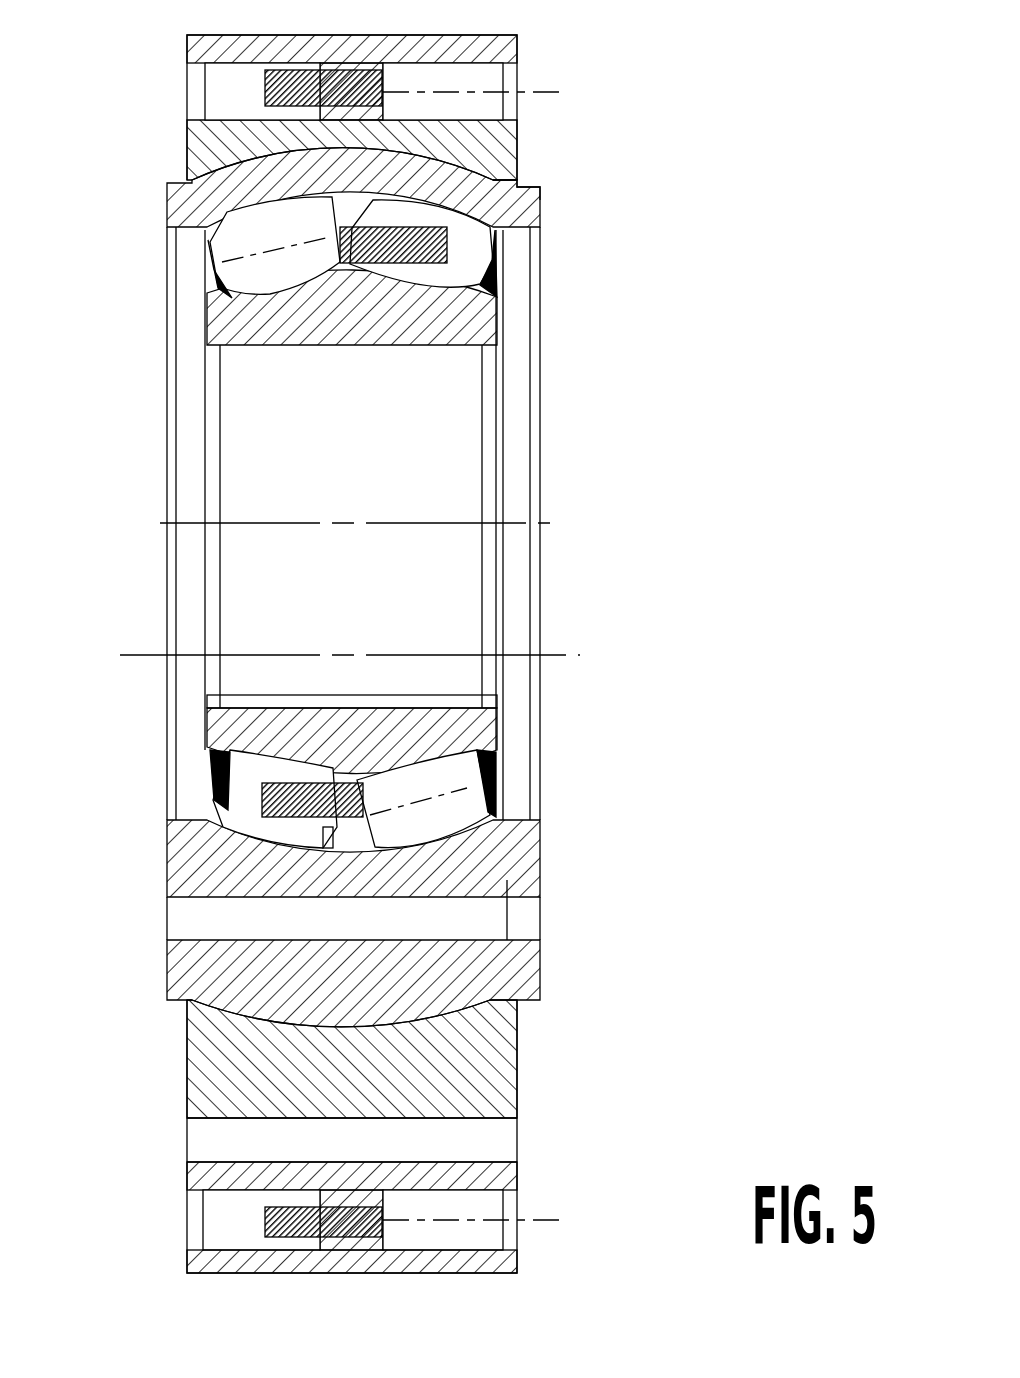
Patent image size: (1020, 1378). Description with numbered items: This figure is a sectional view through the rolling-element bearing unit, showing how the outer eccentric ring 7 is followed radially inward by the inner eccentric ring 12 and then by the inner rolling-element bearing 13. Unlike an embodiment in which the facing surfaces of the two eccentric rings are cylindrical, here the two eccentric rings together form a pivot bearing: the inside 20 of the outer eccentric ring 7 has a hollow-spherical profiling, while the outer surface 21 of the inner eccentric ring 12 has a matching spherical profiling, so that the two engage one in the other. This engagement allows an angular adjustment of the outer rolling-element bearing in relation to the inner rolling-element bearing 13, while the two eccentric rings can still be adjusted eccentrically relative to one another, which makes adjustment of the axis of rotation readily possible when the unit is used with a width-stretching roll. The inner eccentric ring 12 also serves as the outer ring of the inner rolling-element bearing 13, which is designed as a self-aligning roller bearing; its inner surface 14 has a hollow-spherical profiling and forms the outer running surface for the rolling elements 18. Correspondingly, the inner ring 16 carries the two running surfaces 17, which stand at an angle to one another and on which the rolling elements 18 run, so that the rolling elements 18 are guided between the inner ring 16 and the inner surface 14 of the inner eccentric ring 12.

The outer eccentric ring 7 is at (517, 127).
The outer surface 21 is at (186, 97).
The inner eccentric ring 12 is at (186, 158).
The inner rolling-element bearing 13 is at (393, 581).
The inner surface 14 is at (207, 240).
The inner ring 16 is at (503, 318).
The running surfaces 17 is at (207, 287).
The rolling elements 18 is at (428, 275).
The inside 20 is at (500, 203).